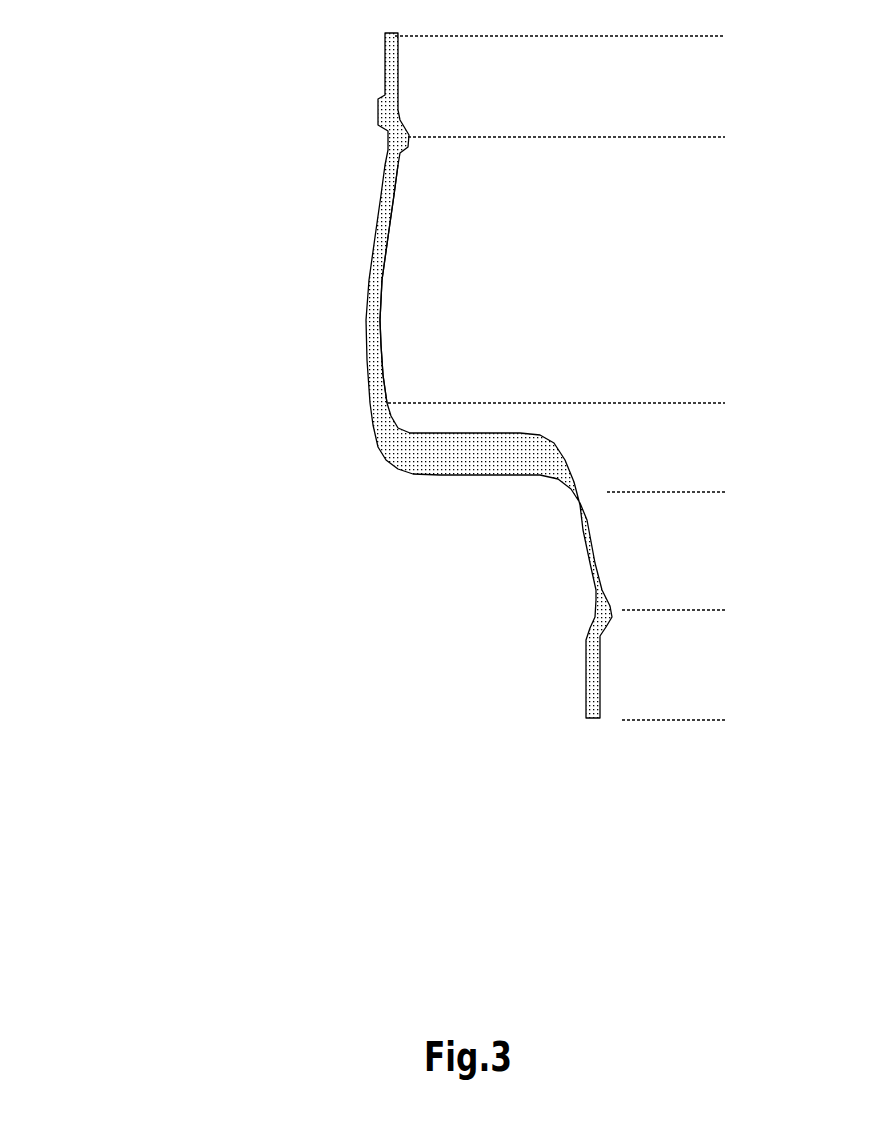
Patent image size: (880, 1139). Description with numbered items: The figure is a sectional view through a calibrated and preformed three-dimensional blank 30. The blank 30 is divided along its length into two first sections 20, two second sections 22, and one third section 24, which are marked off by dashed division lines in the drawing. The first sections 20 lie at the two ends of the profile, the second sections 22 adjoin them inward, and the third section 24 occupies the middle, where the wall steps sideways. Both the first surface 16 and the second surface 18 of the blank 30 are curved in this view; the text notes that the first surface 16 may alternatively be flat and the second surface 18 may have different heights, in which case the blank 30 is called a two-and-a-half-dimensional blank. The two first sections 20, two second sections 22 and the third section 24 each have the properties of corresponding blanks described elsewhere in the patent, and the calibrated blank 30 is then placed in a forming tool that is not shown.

The first surface 16 is at (368, 322).
The second surface 18 is at (383, 252).
The first sections 20 is at (630, 104).
The second sections 22 is at (630, 254).
The third section 24 is at (691, 462).
The calibrated 3D-blank 30 is at (163, 111).